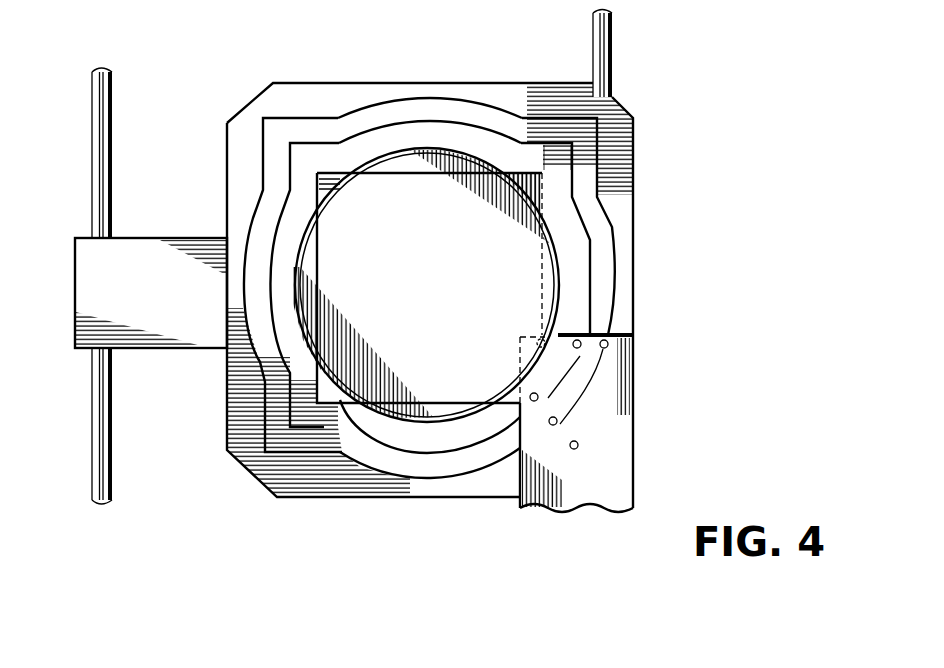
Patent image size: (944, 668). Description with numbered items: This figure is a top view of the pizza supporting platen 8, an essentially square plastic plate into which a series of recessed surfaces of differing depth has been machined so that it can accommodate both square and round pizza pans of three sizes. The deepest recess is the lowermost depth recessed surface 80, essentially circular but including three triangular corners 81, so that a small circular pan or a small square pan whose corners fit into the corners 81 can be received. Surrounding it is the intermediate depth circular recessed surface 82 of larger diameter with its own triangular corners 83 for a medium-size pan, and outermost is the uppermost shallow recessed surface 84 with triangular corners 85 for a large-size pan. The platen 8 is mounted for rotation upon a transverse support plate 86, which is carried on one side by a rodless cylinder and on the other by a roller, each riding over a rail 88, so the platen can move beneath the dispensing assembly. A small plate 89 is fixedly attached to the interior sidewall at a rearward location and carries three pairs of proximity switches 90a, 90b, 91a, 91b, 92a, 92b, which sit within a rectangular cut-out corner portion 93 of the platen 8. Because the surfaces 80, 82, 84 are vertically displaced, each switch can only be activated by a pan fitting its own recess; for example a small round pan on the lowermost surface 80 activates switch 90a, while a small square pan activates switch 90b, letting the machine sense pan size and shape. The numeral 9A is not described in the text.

The platen 8 is at (640, 160).
The lens 9A is at (440, 350).
The lowermost depth recessed surface 80 is at (533, 180).
The triangular corners 81 is at (337, 173).
The intermediate depth circular recessed surface 82 is at (548, 165).
The triangular corners 83 is at (300, 170).
The uppermost shallow recessed surface 84 is at (413, 113).
The triangular corners 85 is at (278, 151).
The transverse support plate 86 is at (149, 305).
The rail 88 is at (113, 93).
The small plate 89 is at (580, 495).
The proximity switch 90a is at (541, 340).
The proximity switch 90b is at (540, 398).
The proximity switch 91a is at (578, 348).
The proximity switch 91b is at (557, 423).
The proximity switch 92a is at (610, 348).
The proximity switch 92b is at (577, 446).
The rectangular cut-out corner portion 93 is at (592, 336).